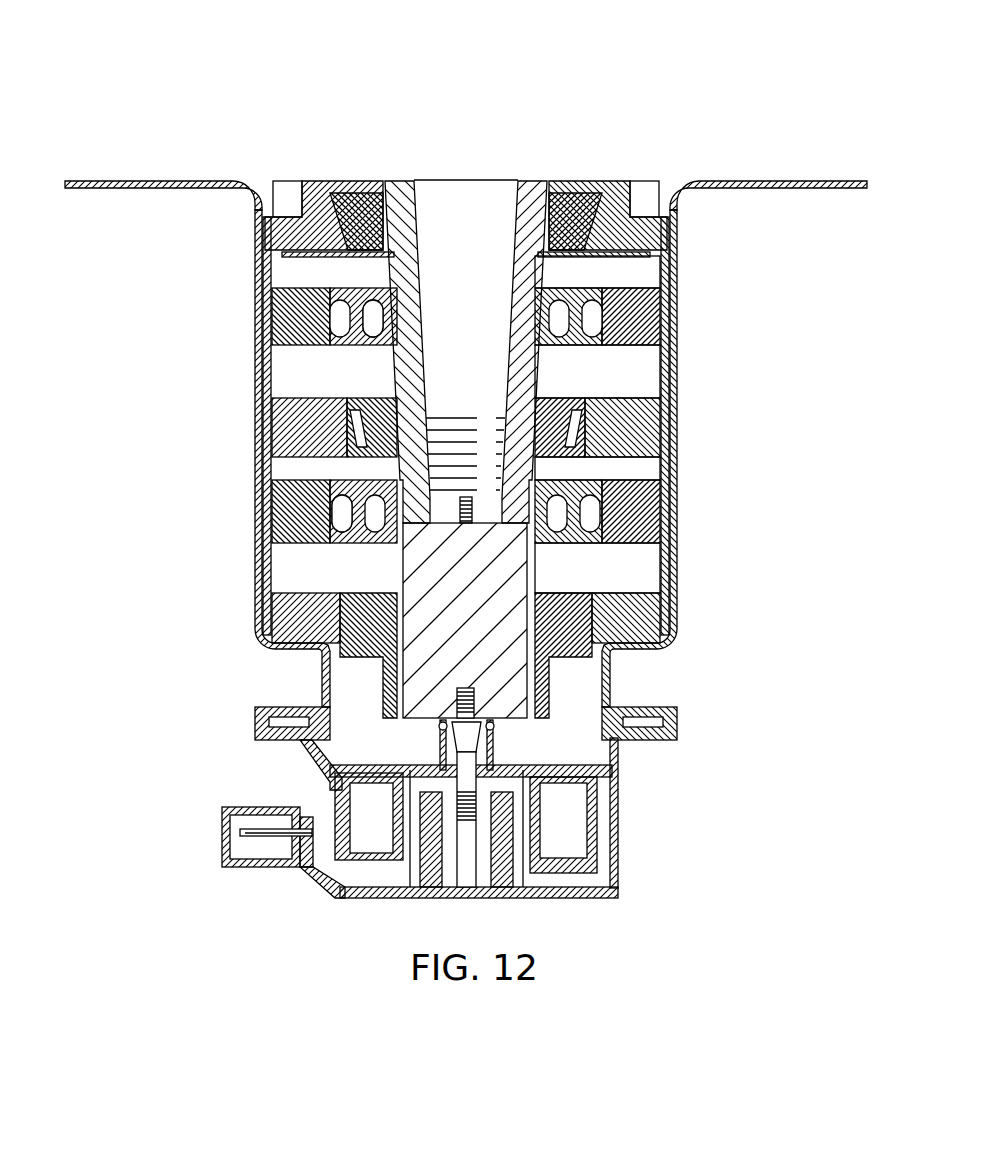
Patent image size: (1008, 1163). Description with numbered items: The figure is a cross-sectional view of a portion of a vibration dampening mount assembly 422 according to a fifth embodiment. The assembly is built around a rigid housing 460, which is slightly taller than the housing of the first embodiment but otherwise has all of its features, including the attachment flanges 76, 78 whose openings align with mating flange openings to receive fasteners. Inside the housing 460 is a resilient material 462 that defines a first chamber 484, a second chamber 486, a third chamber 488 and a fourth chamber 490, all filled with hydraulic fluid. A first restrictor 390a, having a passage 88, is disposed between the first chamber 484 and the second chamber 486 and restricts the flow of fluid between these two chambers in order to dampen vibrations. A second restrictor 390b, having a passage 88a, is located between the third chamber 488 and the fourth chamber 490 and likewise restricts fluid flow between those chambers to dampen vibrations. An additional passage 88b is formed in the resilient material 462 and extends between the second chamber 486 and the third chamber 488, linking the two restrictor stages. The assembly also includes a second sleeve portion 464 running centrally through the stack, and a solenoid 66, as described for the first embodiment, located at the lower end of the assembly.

The vibration dampening mount assembly 422 is at (738, 50).
The attachment flange 78 is at (86, 190).
The attachment flange 76 is at (839, 190).
The housing 460 is at (250, 272).
The resilient material 462 is at (255, 502).
The second sleeve portion 464 is at (512, 249).
The first chamber 484 is at (640, 281).
The second chamber 486 is at (630, 375).
The third chamber 488 is at (640, 475).
The fourth chamber 490 is at (630, 567).
The first restrictor 390a is at (405, 298).
The second restrictor 390b is at (376, 548).
The passage 88 is at (376, 330).
The passage 88a is at (342, 518).
The additional passage 88b is at (356, 417).
The solenoid 66 is at (622, 797).